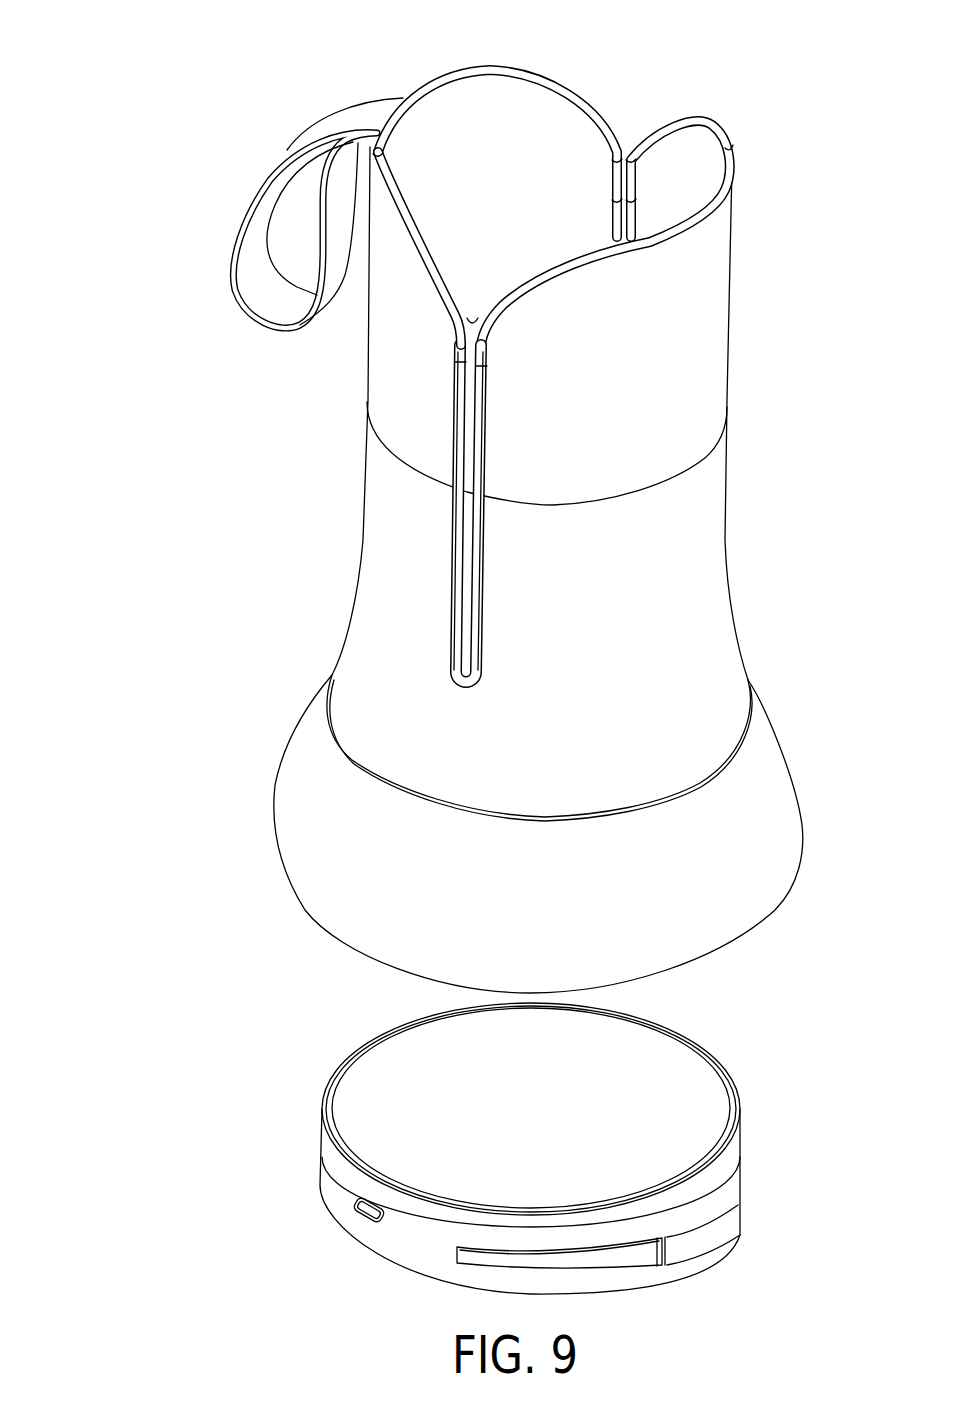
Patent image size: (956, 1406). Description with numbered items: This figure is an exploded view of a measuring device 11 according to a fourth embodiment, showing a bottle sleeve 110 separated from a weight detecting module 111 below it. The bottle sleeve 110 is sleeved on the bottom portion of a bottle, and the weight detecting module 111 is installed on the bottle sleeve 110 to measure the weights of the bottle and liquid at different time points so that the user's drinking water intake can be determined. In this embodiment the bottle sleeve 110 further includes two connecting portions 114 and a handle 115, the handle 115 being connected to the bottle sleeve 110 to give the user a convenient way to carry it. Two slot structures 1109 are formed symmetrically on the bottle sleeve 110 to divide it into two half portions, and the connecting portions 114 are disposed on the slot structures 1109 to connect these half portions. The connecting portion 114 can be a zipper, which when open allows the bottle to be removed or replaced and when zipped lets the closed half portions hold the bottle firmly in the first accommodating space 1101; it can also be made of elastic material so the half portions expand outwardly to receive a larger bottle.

The measuring device 11 is at (450, 647).
The bottle sleeve 110 is at (695, 623).
The first accommodating space 1101 is at (533, 121).
The connecting portion 114 is at (626, 167).
The slot structure 1109 is at (640, 200).
The handle 115 is at (253, 267).
The weight detecting module 111 is at (685, 1060).